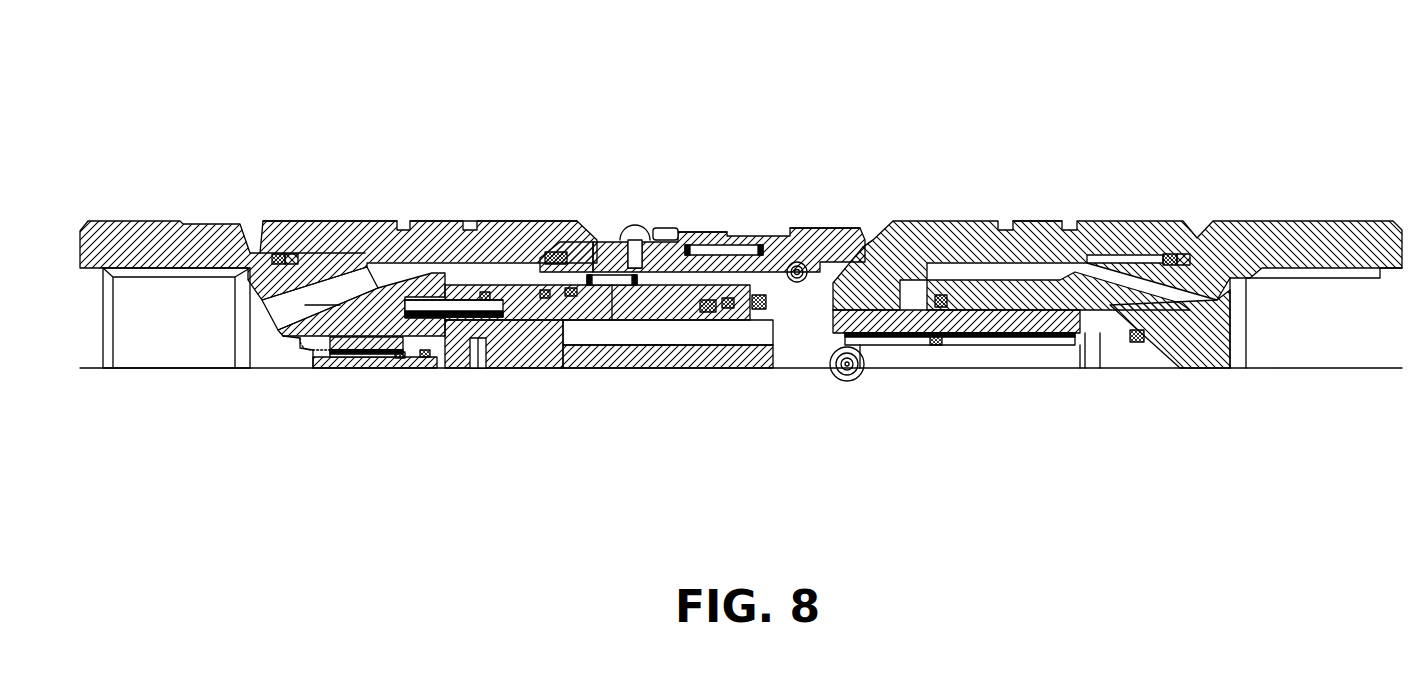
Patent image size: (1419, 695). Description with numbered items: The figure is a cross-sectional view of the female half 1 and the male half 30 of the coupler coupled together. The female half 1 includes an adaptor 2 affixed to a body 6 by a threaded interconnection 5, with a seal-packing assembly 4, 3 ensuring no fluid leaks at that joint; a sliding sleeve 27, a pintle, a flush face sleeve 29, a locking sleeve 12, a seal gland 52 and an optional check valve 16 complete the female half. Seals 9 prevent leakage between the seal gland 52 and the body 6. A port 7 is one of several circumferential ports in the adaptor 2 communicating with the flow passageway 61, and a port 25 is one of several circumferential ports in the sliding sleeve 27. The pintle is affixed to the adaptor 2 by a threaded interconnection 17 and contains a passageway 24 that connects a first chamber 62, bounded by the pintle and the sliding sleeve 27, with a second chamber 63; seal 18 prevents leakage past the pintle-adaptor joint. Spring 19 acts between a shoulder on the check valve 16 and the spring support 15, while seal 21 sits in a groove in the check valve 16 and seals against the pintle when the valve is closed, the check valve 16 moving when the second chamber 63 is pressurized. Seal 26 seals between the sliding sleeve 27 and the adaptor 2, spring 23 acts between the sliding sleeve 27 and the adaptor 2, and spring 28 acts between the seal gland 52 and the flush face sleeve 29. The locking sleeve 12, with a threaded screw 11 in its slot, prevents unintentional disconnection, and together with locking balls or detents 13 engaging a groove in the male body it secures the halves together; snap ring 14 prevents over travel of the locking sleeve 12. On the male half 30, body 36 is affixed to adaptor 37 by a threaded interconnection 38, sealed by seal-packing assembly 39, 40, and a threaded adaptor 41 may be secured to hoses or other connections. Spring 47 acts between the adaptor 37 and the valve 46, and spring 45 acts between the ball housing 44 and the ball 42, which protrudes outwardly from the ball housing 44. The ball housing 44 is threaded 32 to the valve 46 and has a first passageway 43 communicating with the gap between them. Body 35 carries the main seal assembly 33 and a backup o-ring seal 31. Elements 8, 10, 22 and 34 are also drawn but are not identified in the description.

The female half 1 is at (517, 153).
The adaptor 2 is at (175, 245).
The seal-packing assembly 3 is at (278, 262).
The seal-packing assembly 4 is at (296, 258).
The threaded interconnection 5 is at (345, 240).
The body 6 is at (430, 235).
The port 7 is at (515, 270).
The sleeve 8 is at (600, 240).
The seal 9 is at (548, 258).
The seal 10 is at (582, 268).
The threaded screw 11 is at (637, 240).
The locking sleeve 12 is at (757, 233).
The locking balls 13 is at (805, 262).
The snap ring 14 is at (835, 240).
The spring support 15 is at (312, 342).
The check valve 16 is at (340, 347).
The threaded interconnection 17 is at (382, 338).
The seal 18 is at (400, 352).
The spring 19 is at (397, 358).
The seal 21 is at (426, 357).
The rod 22 is at (470, 315).
The spring 23 is at (482, 300).
The passageway 24 is at (575, 350).
The port 25 is at (527, 300).
The seal 26 is at (548, 300).
The sliding sleeve 27 is at (700, 330).
The spring 28 is at (583, 305).
The flush face sleeve 29 is at (725, 245).
The male half 30 is at (1087, 118).
The backup seal 31 is at (727, 305).
The thread 32 is at (872, 240).
The main seal assembly 33 is at (762, 305).
The mandrel 34 is at (925, 300).
The body 35 is at (1015, 240).
The body 36 is at (941, 300).
The adaptor 37 is at (1095, 262).
The threaded interconnection 38 is at (1145, 240).
The seal-packing assembly 39 is at (1178, 262).
The seal-packing assembly 40 is at (1190, 262).
The threaded adaptor 41 is at (1335, 270).
The ball 42 is at (838, 385).
The first passageway 43 is at (860, 345).
The ball housing 44 is at (900, 350).
The spring 45 is at (925, 355).
The valve 46 is at (945, 350).
The spring 47 is at (1133, 330).
The seal gland 52 is at (612, 300).
The flow passageway 61 is at (320, 298).
The first chamber 62 is at (609, 342).
The second chamber 63 is at (474, 355).